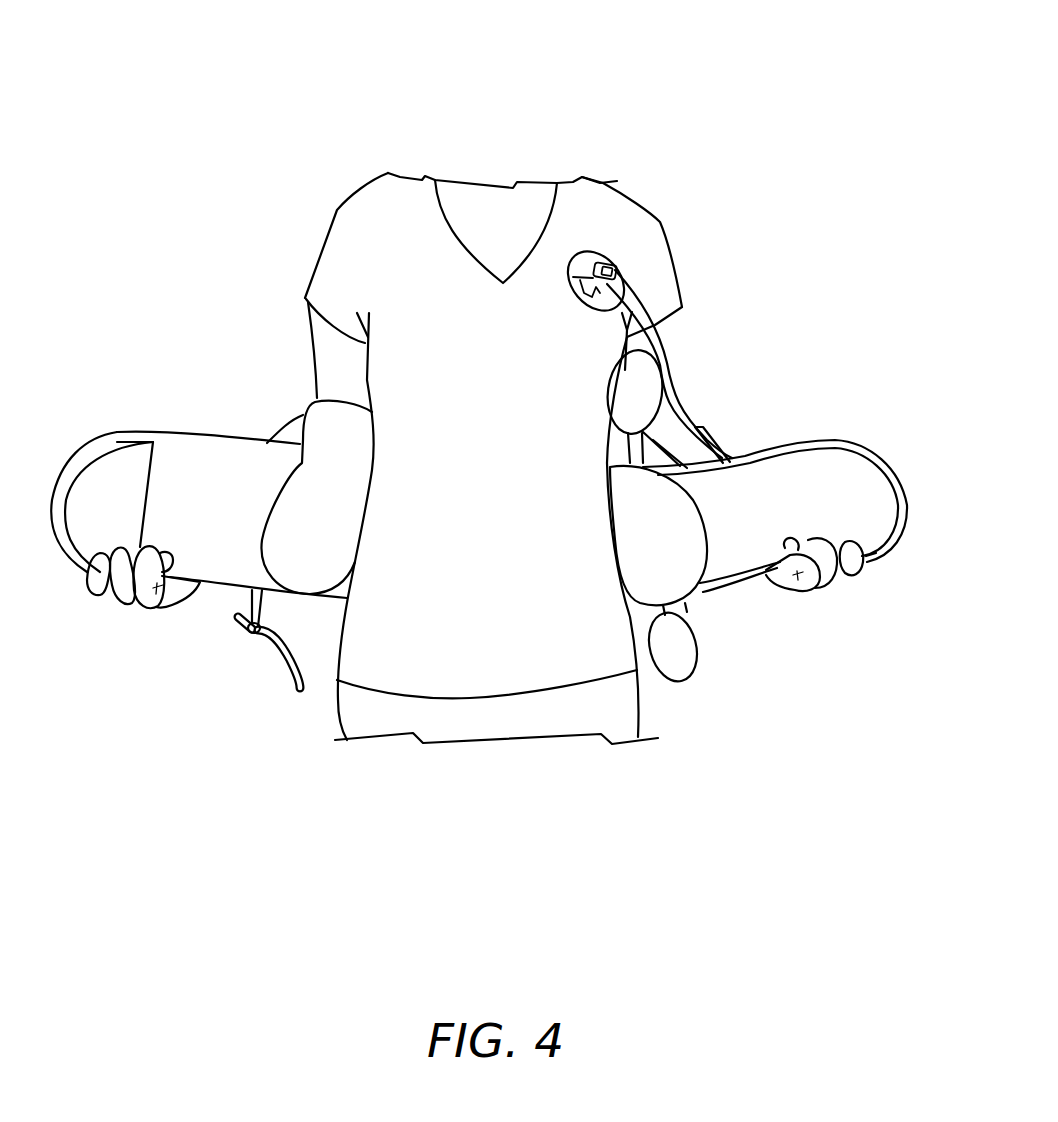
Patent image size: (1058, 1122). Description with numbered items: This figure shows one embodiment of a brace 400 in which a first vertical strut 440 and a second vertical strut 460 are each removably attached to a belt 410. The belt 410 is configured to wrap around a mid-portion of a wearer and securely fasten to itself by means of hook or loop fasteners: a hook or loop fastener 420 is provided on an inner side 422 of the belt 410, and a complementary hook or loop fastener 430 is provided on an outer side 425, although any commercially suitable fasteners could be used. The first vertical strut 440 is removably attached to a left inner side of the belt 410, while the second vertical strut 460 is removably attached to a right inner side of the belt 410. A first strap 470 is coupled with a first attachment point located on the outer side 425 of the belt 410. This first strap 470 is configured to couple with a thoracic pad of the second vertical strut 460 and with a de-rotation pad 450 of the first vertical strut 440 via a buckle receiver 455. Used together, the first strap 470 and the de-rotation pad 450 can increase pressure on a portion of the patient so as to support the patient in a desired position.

The brace 400 is at (770, 92).
The belt 410 is at (848, 517).
The hook or loop fastener 420 is at (117, 468).
The inner side 422 is at (243, 468).
The outer side 425 is at (788, 446).
The complementary hook or loop fastener 430 is at (872, 447).
The first vertical strut 440 is at (638, 537).
The de-rotation pad 450 is at (618, 280).
The buckle receiver 455 is at (573, 287).
The second vertical strut 460 is at (346, 489).
The first strap 470 is at (240, 604).